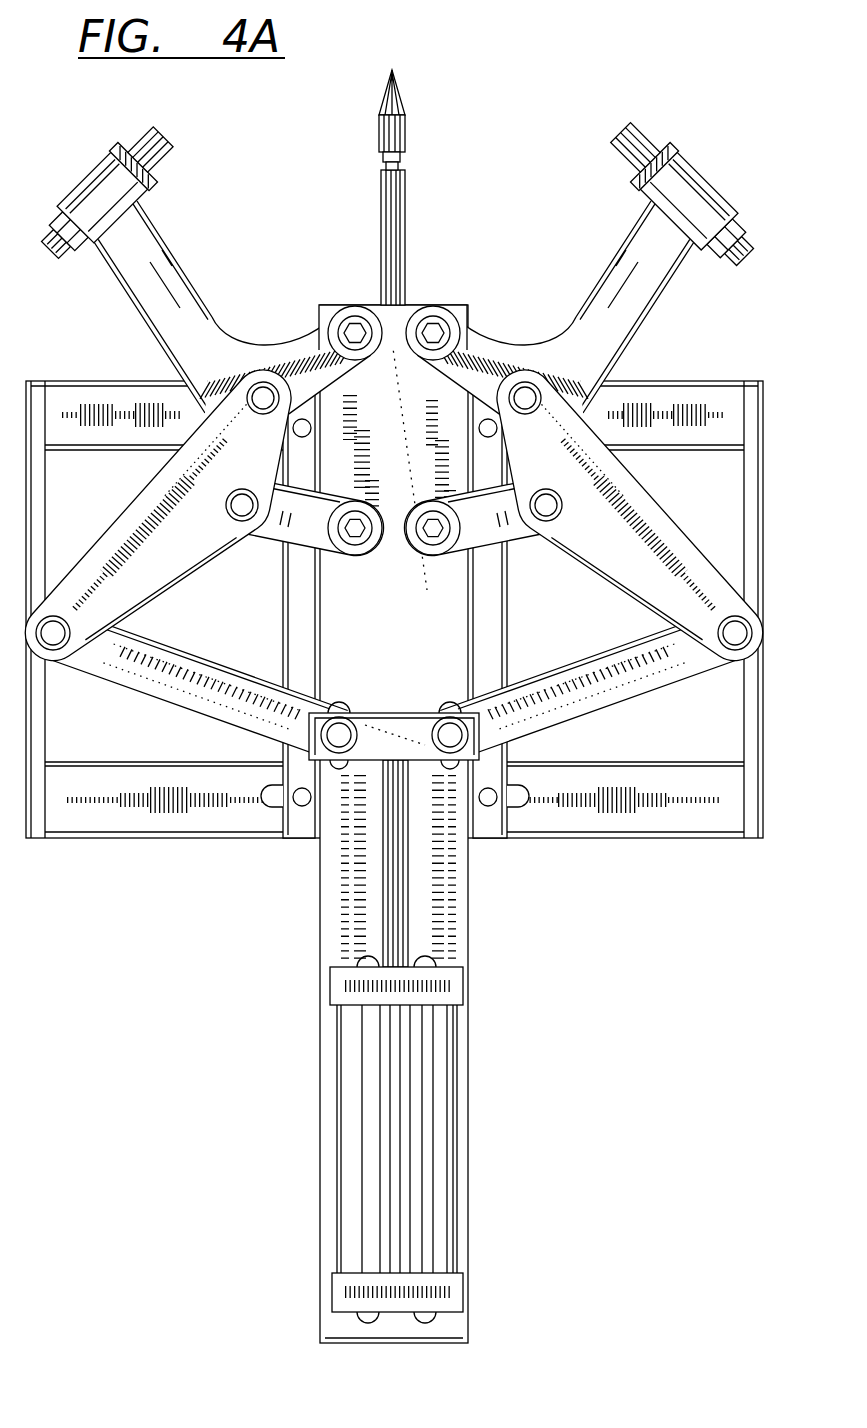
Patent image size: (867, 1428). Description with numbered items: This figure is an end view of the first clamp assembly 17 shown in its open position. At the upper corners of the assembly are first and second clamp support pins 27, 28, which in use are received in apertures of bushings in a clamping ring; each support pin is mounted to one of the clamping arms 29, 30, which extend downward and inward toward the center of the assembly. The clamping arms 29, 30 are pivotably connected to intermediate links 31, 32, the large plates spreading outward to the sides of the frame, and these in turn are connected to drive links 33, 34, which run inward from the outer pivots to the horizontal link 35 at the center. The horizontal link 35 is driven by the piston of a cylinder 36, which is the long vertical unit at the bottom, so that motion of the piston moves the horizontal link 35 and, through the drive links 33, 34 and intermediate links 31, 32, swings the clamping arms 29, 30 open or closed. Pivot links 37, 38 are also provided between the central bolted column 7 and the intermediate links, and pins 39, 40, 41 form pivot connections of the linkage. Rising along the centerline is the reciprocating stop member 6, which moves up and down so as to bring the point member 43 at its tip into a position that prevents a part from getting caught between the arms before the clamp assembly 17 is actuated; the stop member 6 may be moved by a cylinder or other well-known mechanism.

The reciprocating stop member 6 is at (405, 240).
The slider column 7 is at (393, 903).
The first clamp assembly 17 is at (678, 350).
The first clamp support pin 27 is at (632, 142).
The second clamp support pin 28 is at (170, 135).
The clamping arm 29 is at (618, 285).
The clamping arm 30 is at (160, 290).
The intermediate link 31 is at (607, 523).
The intermediate link 32 is at (187, 492).
The drive link 33 is at (657, 657).
The drive link 34 is at (163, 675).
The horizontal link 35 is at (413, 738).
The cylinder 36 is at (392, 1158).
The pivot link 37 is at (497, 522).
The pivot link 38 is at (305, 522).
The pivot pin 39 is at (262, 395).
The pivot pin 40 is at (240, 505).
The bolt 41 is at (358, 535).
The point member 43 is at (400, 95).